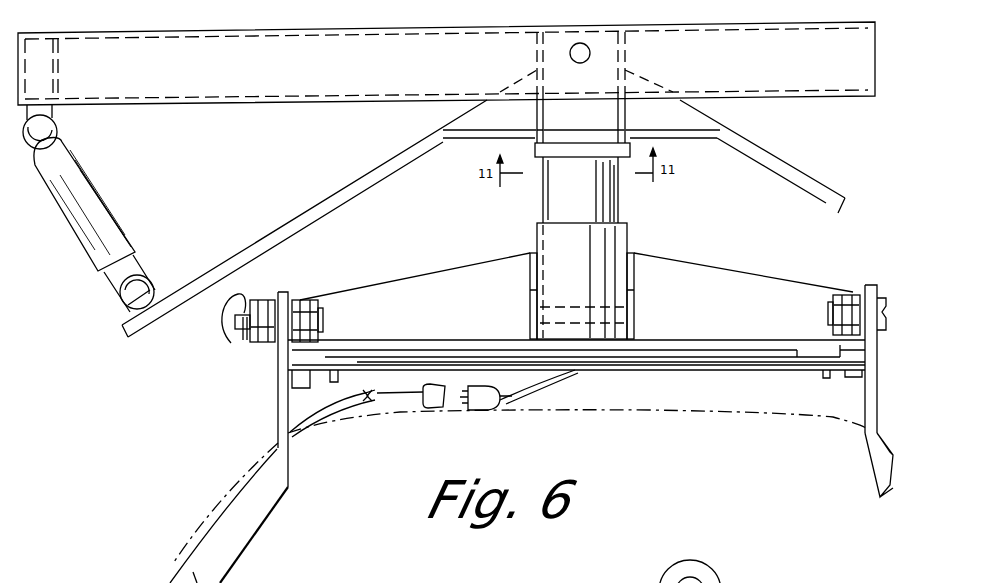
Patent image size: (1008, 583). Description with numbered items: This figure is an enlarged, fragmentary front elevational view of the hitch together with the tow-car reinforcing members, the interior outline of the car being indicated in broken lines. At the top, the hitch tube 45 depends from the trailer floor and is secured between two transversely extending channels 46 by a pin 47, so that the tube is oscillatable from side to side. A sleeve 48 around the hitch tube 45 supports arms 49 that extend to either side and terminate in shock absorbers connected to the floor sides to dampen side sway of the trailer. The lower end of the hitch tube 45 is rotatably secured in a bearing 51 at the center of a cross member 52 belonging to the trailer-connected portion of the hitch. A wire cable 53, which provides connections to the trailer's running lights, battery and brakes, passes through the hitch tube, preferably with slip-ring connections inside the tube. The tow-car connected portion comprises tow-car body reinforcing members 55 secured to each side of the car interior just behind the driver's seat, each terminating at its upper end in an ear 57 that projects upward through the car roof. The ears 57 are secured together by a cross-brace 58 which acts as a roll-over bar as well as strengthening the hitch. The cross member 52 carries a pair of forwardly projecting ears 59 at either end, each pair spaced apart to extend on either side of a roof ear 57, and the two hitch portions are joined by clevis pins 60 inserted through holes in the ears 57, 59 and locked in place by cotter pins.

The hitch tube 45 is at (581, 160).
The channels 46 is at (809, 65).
The pin 47 is at (584, 43).
The sleeve 48 is at (627, 48).
The arms 49 is at (372, 172).
The bearing 51 is at (622, 233).
The cross member 52 is at (715, 278).
The wire cable 53 is at (555, 390).
The tow-car body reinforcing members 55 is at (260, 521).
The ears 57 is at (278, 398).
The cross-brace 58 is at (728, 363).
The forwardly projecting ears 59 is at (300, 300).
The clevis pins 60 is at (232, 328).